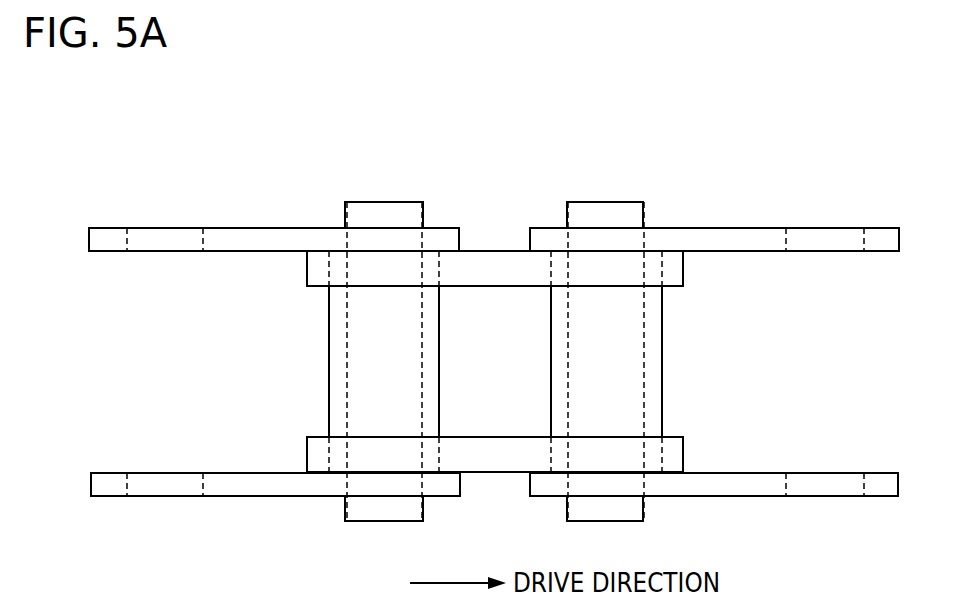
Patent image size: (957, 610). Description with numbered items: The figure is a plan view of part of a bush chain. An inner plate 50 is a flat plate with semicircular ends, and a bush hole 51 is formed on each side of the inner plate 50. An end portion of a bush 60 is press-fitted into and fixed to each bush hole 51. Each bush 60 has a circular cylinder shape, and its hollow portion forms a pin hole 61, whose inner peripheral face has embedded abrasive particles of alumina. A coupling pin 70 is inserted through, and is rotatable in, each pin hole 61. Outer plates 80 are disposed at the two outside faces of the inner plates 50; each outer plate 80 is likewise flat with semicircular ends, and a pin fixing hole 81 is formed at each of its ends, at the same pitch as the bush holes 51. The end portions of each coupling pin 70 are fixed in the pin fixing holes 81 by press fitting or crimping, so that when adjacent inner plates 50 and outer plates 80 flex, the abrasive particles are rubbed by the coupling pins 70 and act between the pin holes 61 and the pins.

The inner plate 50 is at (492, 250).
The bush hole 51 is at (434, 265).
The bush 60 is at (440, 342).
The pin hole 61 is at (345, 372).
The coupling pin 70 is at (402, 202).
The outer plate 80 is at (240, 228).
The pin fixing hole 81 is at (203, 242).